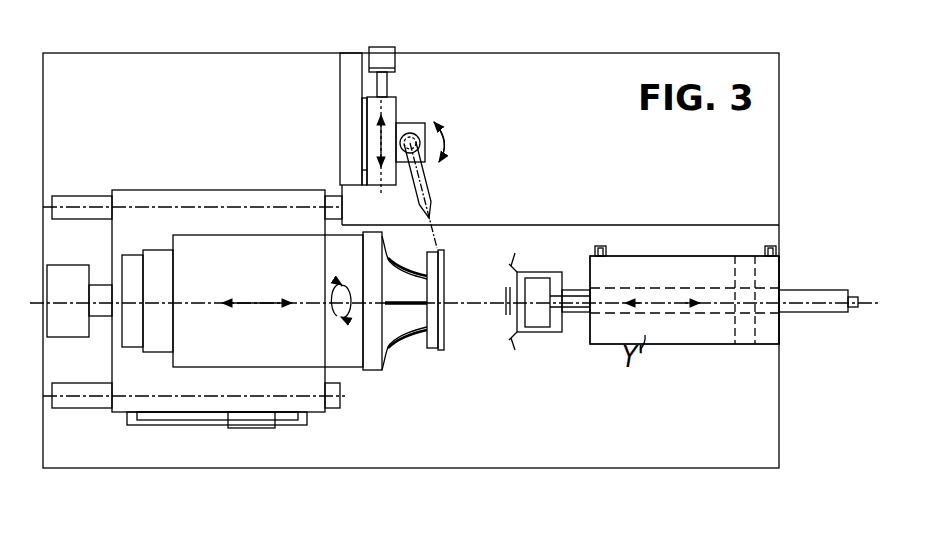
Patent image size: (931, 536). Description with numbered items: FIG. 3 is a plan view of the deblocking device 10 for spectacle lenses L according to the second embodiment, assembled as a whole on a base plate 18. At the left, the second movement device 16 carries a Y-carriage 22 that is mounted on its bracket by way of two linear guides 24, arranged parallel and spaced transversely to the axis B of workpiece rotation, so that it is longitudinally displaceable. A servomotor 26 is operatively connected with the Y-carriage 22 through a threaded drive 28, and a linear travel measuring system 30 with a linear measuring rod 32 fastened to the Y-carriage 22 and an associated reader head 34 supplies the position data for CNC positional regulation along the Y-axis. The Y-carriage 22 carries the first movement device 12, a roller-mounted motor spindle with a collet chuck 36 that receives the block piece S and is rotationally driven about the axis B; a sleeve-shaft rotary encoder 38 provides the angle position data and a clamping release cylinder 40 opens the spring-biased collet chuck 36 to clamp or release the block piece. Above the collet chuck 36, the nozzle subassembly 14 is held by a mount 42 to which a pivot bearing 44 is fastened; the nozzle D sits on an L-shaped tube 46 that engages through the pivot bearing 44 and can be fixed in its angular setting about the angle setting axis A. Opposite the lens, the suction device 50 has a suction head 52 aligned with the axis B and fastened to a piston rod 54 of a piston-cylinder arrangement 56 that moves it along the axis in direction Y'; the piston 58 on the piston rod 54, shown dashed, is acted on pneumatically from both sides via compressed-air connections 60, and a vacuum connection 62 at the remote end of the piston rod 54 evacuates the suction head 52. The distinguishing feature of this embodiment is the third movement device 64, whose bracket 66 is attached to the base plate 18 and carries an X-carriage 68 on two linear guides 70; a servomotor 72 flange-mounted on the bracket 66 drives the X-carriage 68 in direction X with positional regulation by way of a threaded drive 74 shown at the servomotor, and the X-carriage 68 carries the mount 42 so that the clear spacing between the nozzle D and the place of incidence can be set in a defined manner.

The deblocking device 10 is at (488, 92).
The first movement device 12 is at (352, 372).
The nozzle subassembly 14 is at (418, 125).
The second movement device 16 is at (162, 190).
The base plate 18 is at (742, 433).
The Y-carriage 22 is at (193, 200).
The linear guides 24 is at (78, 196).
The servomotor 26 is at (83, 297).
The threaded drive 28 is at (100, 295).
The linear travel measuring system 30 is at (185, 425).
The linear measuring rod 32 is at (160, 420).
The reader head 34 is at (257, 422).
The collet chuck 36 is at (400, 258).
The sleeve-shaft rotary encoder 38 is at (163, 330).
The clamping release cylinder 40 is at (130, 272).
The mount 42 is at (440, 141).
The pivot bearing 44 is at (439, 158).
The tube 46 is at (430, 182).
The suction device 50 is at (542, 341).
The suction head 52 is at (540, 272).
The piston rod 54 is at (796, 292).
The piston-cylinder arrangement 56 is at (680, 346).
The piston 58 is at (742, 348).
The compressed-air connections 60 is at (600, 246).
The vacuum connection 62 is at (852, 308).
The third movement device 64 is at (366, 108).
The bracket 66 is at (340, 78).
The X-carriage 68 is at (398, 110).
The linear guides 70 is at (362, 170).
The servomotor 72 is at (385, 57).
The actuator mount 74 is at (372, 62).